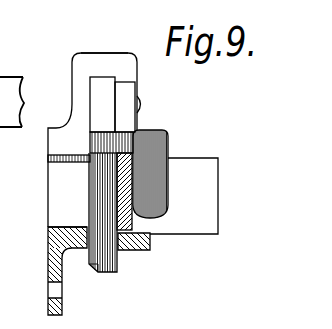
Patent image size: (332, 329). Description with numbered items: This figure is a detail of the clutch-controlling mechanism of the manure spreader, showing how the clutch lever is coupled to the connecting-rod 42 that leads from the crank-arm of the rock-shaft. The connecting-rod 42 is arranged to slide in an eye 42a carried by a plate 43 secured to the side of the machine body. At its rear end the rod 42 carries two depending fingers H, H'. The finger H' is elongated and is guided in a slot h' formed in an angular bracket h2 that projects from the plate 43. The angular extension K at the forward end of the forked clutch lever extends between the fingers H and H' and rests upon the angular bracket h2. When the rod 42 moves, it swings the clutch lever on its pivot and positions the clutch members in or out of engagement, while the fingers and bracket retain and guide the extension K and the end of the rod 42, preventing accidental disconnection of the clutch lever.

The connecting-rod 42 is at (89, 79).
The eye 42a is at (105, 41).
The plate 43 is at (48, 250).
The angular extension K is at (133, 185).
The depending finger H is at (161, 174).
The elongated depending finger H' is at (112, 189).
The slot h' is at (53, 209).
The angular bracket h2 is at (142, 252).